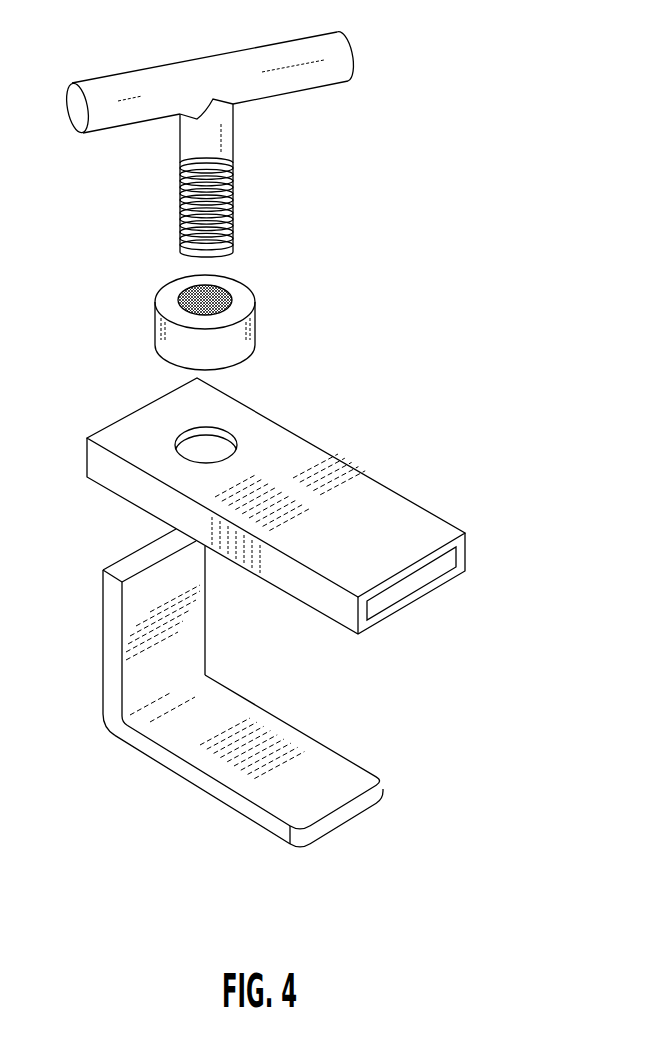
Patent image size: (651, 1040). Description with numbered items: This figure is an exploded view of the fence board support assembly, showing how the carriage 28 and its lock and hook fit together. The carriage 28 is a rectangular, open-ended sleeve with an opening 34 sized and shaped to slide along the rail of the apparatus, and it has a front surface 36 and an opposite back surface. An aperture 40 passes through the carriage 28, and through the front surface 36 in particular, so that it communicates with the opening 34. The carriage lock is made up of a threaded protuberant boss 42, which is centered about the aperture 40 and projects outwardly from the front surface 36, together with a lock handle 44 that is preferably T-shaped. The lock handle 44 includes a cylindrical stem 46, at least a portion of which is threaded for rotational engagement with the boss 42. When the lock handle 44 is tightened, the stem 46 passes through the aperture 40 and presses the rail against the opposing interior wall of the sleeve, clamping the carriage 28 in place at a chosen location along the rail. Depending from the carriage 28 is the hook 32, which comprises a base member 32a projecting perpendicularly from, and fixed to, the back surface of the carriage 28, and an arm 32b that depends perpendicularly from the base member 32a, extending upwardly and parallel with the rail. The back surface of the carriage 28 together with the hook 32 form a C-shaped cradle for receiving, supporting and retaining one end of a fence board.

The carriage 28 is at (271, 522).
The hook 32 is at (210, 705).
The base member 32a is at (132, 678).
The arm 32b is at (268, 797).
The opening 34 is at (427, 579).
The front surface 36 is at (369, 541).
The aperture 40 is at (215, 440).
The threaded protuberant boss 42 is at (243, 337).
The lock handle 44 is at (100, 92).
The cylindrical stem 46 is at (219, 151).